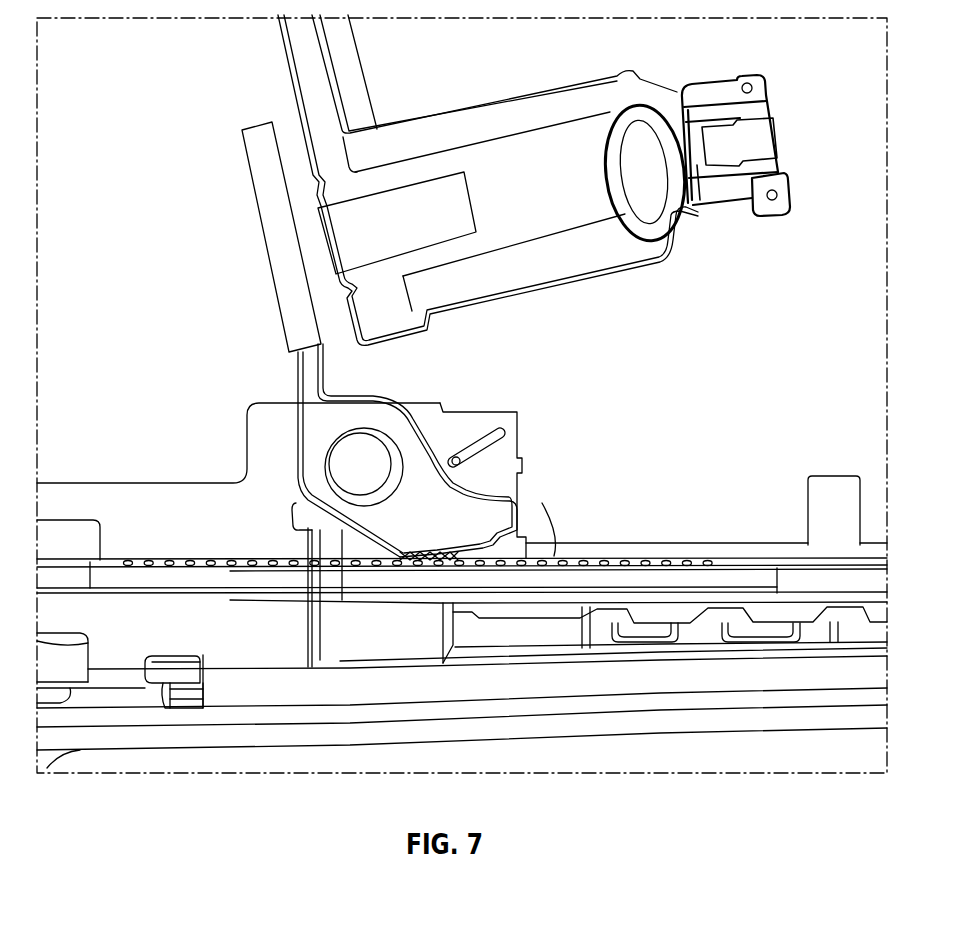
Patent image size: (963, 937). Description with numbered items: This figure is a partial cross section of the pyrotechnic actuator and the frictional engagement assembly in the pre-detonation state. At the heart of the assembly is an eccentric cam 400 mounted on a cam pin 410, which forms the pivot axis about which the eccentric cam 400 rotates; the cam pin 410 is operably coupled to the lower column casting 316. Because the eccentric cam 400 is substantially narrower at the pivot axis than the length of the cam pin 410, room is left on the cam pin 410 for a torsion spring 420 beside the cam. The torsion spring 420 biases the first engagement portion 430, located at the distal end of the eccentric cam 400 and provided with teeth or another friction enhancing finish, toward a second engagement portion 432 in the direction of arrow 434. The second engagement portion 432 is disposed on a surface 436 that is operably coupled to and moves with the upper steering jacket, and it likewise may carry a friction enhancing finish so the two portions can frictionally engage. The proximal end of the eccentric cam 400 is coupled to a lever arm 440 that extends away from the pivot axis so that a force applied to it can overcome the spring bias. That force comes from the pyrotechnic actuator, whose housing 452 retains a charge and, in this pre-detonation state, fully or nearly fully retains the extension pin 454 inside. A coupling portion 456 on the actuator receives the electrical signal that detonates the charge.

The lower column casting 316 is at (88, 493).
The eccentric cam 400 is at (312, 488).
The cam pin 410 is at (344, 475).
The torsion spring 420 is at (477, 440).
The first engagement portion 430 is at (437, 564).
The second engagement portion 432 is at (667, 556).
The arrow 434 is at (550, 556).
The surface 436 is at (723, 577).
The lever arm 440 is at (257, 200).
The housing 452 is at (515, 123).
The extension pin 454 is at (363, 207).
The coupling portion 456 is at (753, 107).